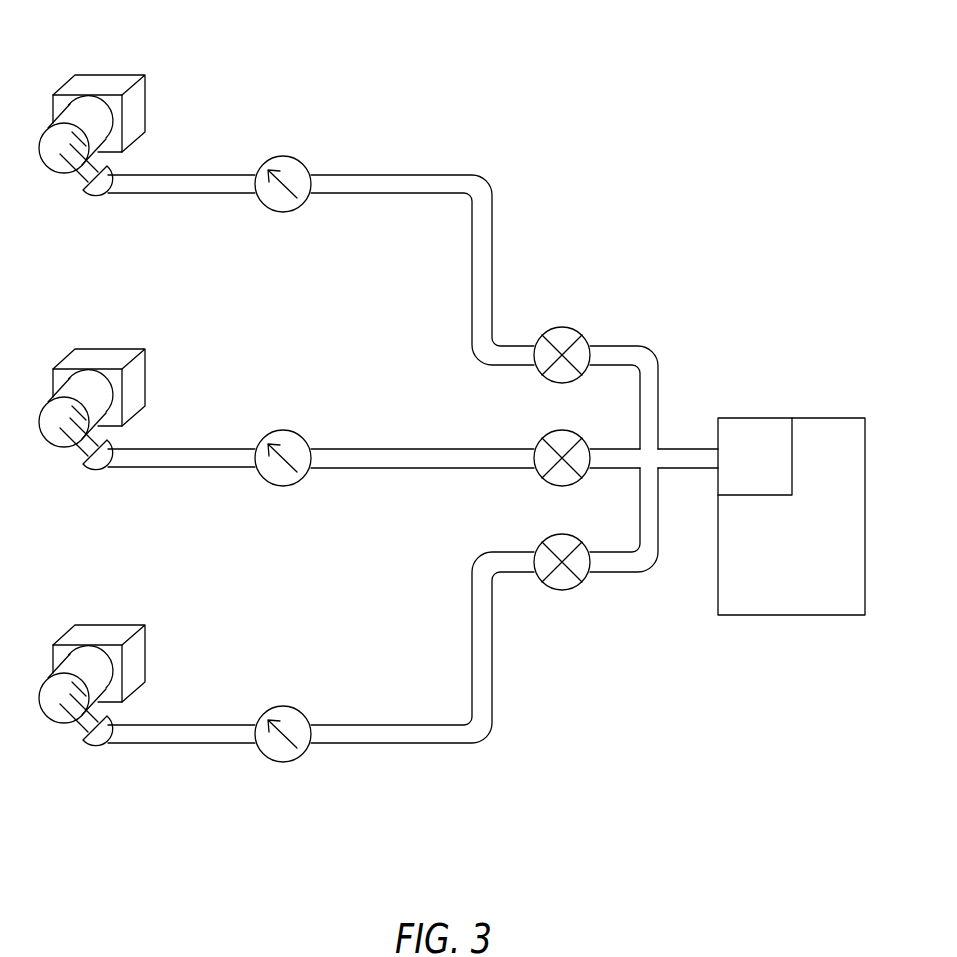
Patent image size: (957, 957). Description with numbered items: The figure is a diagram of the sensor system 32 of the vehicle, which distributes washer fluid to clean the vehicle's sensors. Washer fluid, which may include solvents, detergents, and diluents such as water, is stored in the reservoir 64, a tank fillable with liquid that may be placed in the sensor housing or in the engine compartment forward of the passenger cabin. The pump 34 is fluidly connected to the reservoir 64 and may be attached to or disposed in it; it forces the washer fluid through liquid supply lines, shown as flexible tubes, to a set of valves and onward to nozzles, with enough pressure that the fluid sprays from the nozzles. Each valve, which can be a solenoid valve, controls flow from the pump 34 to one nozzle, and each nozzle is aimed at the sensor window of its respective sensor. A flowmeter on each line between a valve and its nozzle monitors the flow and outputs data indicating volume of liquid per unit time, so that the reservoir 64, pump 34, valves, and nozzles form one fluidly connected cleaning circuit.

The sensor system 32 is at (617, 48).
The pump 34 is at (773, 417).
The reservoir 64 is at (830, 616).